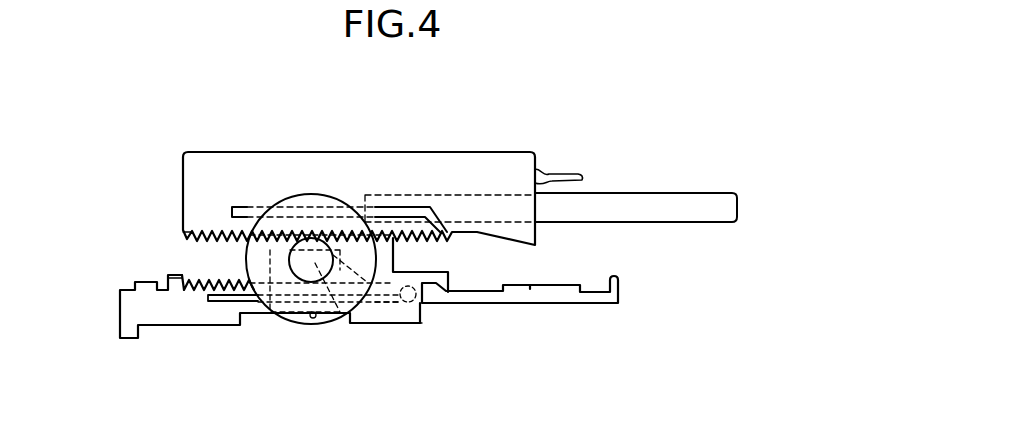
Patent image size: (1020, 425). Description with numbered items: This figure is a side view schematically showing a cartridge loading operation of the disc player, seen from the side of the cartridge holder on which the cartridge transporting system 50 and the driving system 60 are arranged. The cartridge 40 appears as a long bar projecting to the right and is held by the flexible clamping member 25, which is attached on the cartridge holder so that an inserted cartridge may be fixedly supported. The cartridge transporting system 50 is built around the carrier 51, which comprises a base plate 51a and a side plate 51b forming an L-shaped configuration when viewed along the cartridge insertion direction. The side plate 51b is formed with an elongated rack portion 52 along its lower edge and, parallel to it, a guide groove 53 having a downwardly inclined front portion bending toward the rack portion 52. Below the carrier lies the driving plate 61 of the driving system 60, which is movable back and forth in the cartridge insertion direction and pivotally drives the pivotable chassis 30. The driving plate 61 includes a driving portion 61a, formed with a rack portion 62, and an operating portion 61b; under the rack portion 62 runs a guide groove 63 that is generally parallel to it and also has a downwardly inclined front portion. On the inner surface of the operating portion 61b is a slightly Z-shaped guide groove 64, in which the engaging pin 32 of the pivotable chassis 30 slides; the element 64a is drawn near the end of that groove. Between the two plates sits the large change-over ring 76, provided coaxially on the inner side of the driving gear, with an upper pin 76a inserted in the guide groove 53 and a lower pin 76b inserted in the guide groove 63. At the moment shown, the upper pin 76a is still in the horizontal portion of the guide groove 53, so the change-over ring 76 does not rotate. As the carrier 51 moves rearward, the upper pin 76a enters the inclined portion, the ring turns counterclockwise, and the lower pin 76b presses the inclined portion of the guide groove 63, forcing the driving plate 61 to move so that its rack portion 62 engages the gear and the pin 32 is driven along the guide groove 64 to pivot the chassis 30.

The flexible clamping member 25 is at (570, 170).
The pivotable chassis 30 is at (232, 276).
The engaging pin 32 is at (418, 298).
The cartridge 40 is at (697, 194).
The cartridge transporting system 50 is at (403, 150).
The carrier 51 is at (503, 150).
The base plate 51a is at (345, 152).
The side plate 51b is at (197, 172).
The elongated rack portion 52 is at (183, 236).
The guide groove 53 is at (252, 206).
The driving system 60 is at (520, 328).
The driving plate 61 is at (168, 327).
The driving portion 61a is at (128, 308).
The operating portion 61b is at (393, 251).
The rack portion 62 is at (195, 287).
The guide groove 63 is at (216, 303).
The guide groove 64 is at (345, 260).
The lever end 64a is at (390, 304).
The change-over ring 76 is at (299, 326).
The upper pin 76a is at (316, 210).
The lower pin 76b is at (316, 320).